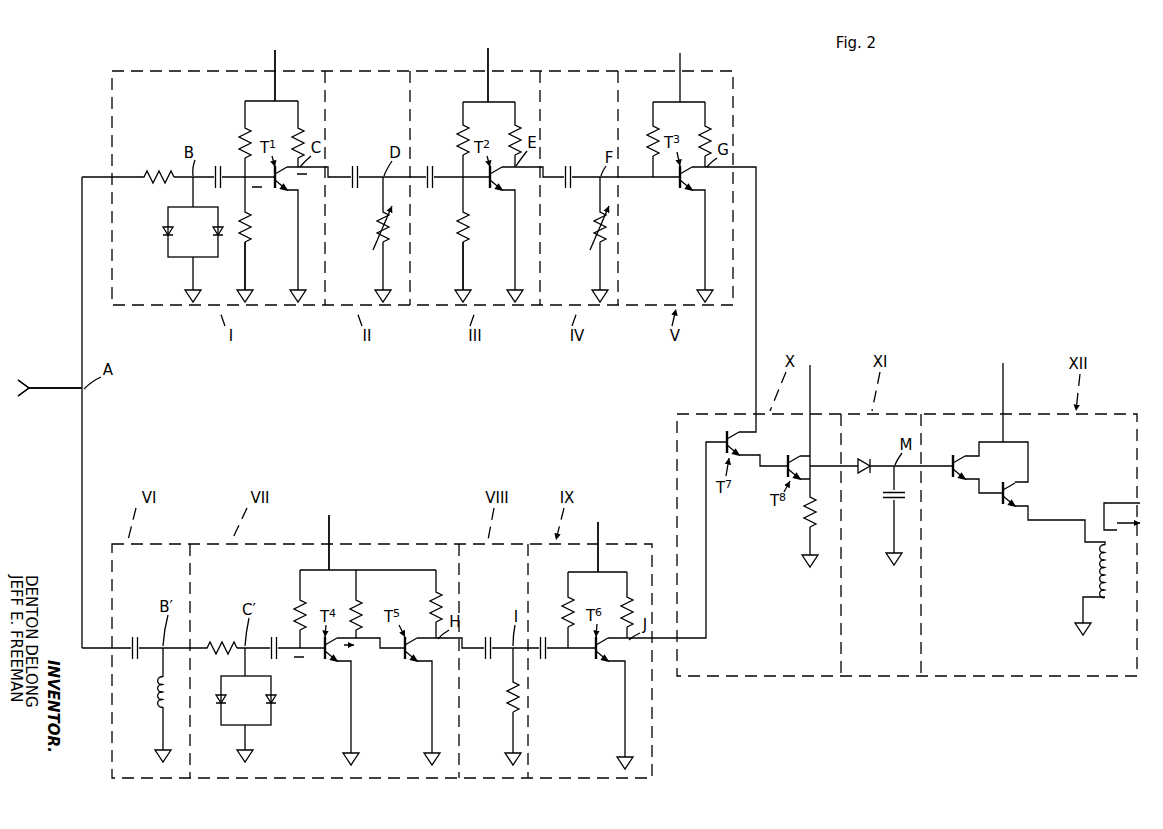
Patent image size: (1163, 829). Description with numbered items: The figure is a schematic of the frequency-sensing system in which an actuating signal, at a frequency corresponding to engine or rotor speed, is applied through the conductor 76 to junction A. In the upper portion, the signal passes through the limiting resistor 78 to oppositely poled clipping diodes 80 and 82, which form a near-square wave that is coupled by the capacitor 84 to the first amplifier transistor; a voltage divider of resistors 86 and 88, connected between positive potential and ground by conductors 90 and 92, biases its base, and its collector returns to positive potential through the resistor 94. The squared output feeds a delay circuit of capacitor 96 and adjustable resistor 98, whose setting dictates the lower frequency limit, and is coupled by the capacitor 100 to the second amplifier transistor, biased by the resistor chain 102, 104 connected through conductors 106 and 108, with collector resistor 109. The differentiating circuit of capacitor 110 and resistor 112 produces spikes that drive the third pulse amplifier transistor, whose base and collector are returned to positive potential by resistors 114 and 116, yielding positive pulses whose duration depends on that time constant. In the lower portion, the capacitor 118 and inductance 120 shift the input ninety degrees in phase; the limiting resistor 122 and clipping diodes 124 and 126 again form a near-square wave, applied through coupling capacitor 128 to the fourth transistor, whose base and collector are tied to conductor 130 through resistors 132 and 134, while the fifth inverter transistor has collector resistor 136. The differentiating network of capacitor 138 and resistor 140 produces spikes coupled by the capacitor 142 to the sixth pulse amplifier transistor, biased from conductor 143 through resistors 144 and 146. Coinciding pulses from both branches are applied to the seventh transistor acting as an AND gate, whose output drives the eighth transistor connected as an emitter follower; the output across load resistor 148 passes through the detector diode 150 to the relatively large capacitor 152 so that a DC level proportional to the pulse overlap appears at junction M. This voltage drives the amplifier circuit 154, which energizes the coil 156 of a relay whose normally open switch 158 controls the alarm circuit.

The conductor 76 is at (60, 386).
The limiting resistor 78 is at (142, 172).
The clipping diode 80 is at (168, 233).
The clipping diode 82 is at (220, 228).
The capacitor 84 is at (218, 165).
The resistor 86 is at (251, 136).
The resistor 88 is at (251, 233).
The conductor 90 is at (276, 62).
The conductor 92 is at (246, 274).
The resistor 94 is at (305, 136).
The capacitor 96 is at (357, 165).
The resistor 98 is at (380, 223).
The capacitor 100 is at (430, 190).
The resistor 102 is at (469, 141).
The resistor 104 is at (468, 238).
The conductor 106 is at (489, 62).
The conductor 108 is at (466, 277).
The resistor 109 is at (520, 141).
The capacitor 110 is at (569, 166).
The resistor 112 is at (597, 223).
The resistor 114 is at (650, 130).
The resistor 116 is at (711, 132).
The capacitor 118 is at (136, 635).
The inductance 120 is at (158, 688).
The limiting resistor 122 is at (210, 641).
The clipping diode 124 is at (220, 696).
The clipping diode 126 is at (274, 700).
The coupling capacitor 128 is at (274, 635).
The conductor 130 is at (330, 532).
The resistor 132 is at (303, 608).
The resistor 134 is at (360, 606).
The resistor 136 is at (442, 610).
The capacitor 138 is at (489, 637).
The resistor 140 is at (510, 699).
The capacitor 142 is at (545, 637).
The conductor 143 is at (599, 536).
The resistor 144 is at (573, 607).
The resistor 146 is at (632, 590).
The load resistor 148 is at (805, 526).
The detector diode 150 is at (869, 449).
The capacitor 152 is at (890, 501).
The amplifier circuit 154 is at (991, 500).
The coil 156 is at (1098, 569).
The normally open switch 158 is at (1108, 507).